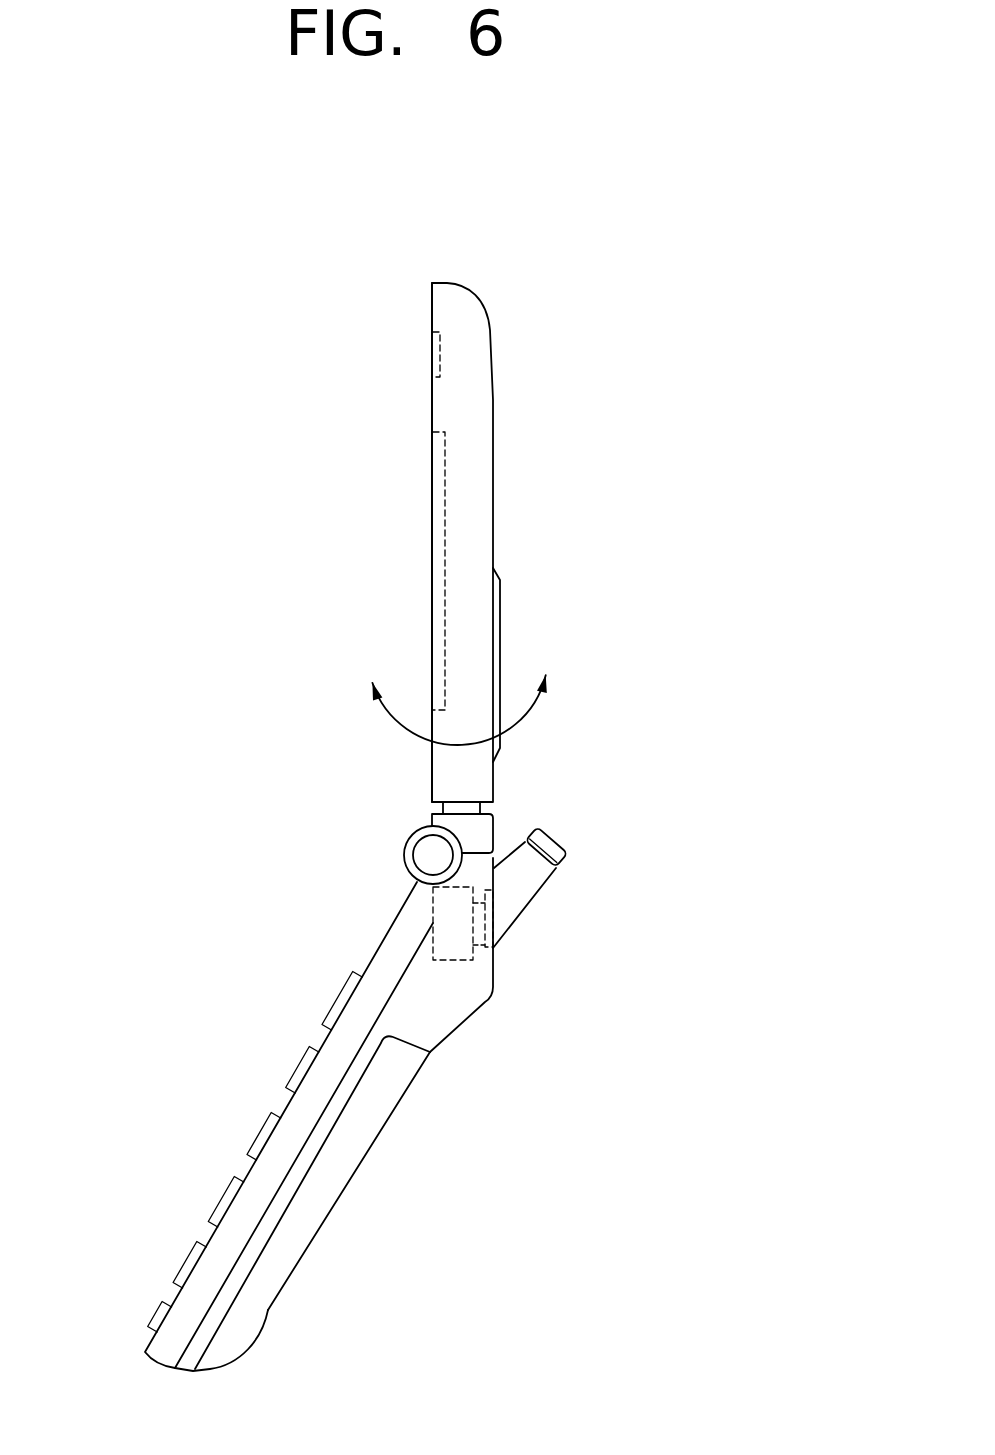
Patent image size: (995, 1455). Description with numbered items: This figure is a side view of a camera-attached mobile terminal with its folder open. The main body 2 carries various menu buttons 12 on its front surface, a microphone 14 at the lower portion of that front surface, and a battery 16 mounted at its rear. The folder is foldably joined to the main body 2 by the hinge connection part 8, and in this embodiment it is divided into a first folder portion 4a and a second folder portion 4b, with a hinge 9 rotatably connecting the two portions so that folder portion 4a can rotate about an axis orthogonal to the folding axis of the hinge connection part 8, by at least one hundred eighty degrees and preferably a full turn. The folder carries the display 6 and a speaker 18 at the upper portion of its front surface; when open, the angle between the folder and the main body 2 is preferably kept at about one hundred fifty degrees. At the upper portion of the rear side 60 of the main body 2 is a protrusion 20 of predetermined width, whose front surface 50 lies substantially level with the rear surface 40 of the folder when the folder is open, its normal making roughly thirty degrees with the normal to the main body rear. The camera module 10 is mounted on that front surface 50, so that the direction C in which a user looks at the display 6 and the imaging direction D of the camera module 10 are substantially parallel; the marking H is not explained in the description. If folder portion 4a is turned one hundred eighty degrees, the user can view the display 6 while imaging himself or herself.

The main body 2 is at (300, 1118).
The first folder portion 4a is at (478, 536).
The second folder portion 4b is at (495, 827).
The display 6 is at (444, 474).
The hinge connection part 8 is at (433, 852).
The hinge 9 is at (483, 806).
The camera module 10 is at (488, 932).
The menu buttons 12 is at (262, 1134).
The microphone 14 is at (165, 1314).
The battery 16 is at (338, 1172).
The speaker 18 is at (437, 351).
The protrusion 20 is at (430, 1032).
The rear surface of the folder 40 is at (494, 470).
The front surface of the protrusion 50 is at (488, 998).
The rear side of the main body 60 is at (583, 949).
The viewing direction C is at (412, 562).
The imaging direction D is at (500, 919).
The protrusion H is at (530, 613).